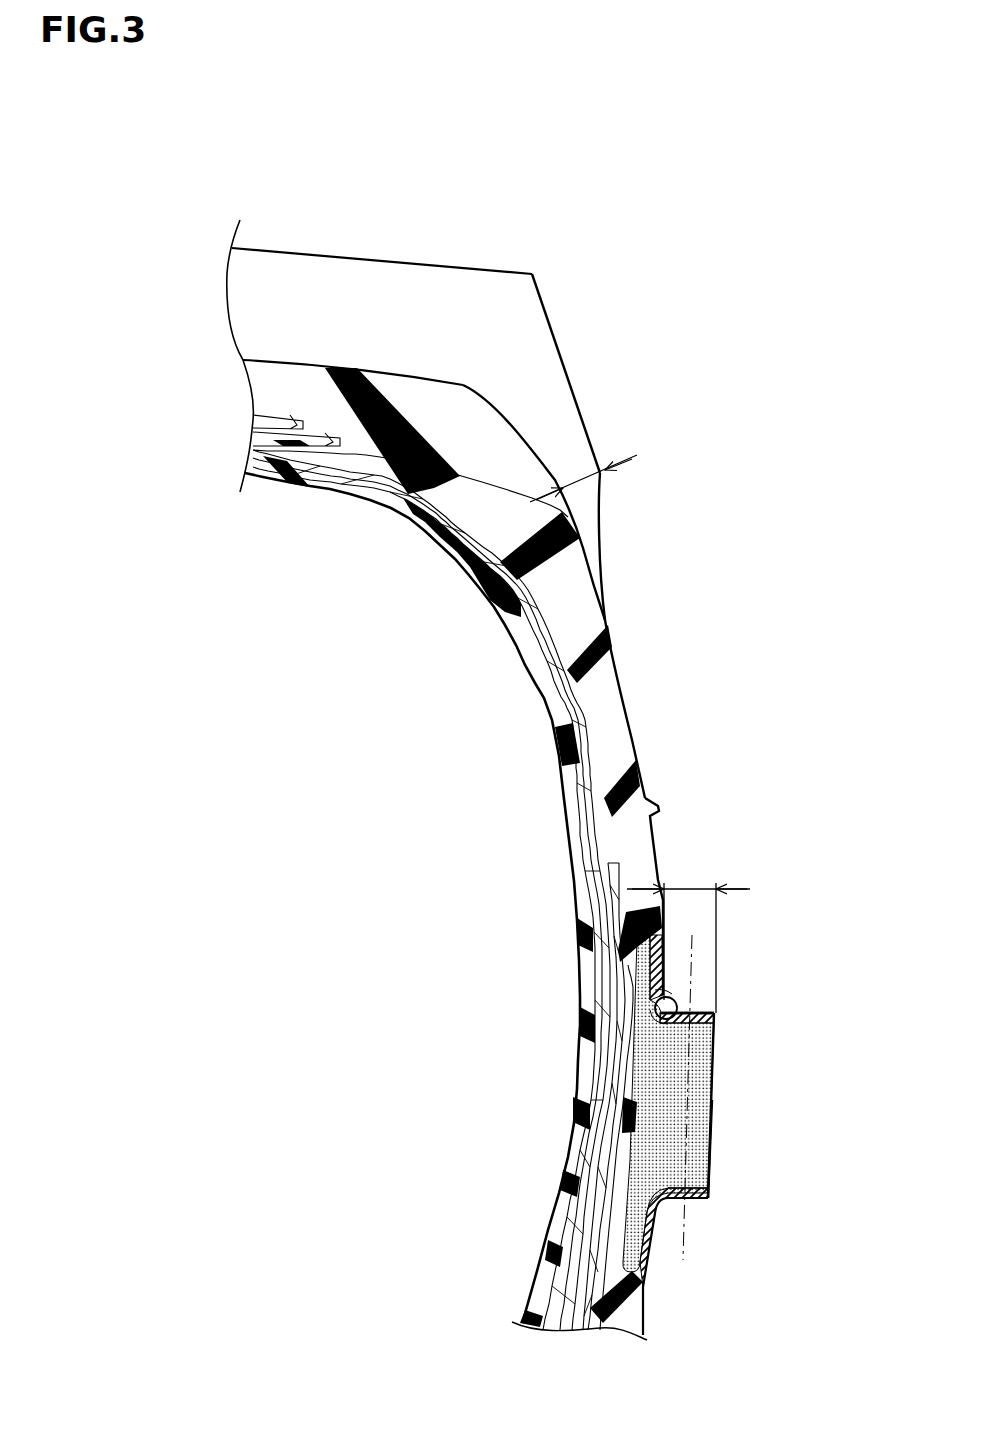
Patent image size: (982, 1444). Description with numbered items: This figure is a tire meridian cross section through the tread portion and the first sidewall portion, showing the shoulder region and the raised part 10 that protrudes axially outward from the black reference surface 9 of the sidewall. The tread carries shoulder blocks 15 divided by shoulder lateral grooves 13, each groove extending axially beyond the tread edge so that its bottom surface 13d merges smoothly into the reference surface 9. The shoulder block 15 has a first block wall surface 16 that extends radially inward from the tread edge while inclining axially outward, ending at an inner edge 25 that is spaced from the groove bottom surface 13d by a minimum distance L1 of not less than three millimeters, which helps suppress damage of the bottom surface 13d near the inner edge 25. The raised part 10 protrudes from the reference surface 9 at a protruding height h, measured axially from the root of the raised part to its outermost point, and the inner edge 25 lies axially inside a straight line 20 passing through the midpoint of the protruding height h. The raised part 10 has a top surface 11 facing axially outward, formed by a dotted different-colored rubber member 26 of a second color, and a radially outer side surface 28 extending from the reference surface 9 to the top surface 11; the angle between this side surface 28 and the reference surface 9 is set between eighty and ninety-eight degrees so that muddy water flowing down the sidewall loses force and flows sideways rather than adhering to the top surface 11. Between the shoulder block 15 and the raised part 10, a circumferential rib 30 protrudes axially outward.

The shoulder block 15 is at (337, 238).
The shoulder lateral groove 13 is at (390, 318).
The bottom surface of the shoulder lateral groove 13d is at (465, 385).
The first block wall surface 16 is at (562, 352).
The inner edge 25 is at (605, 470).
The minimum distance L1 is at (580, 484).
The reference surface 9 is at (633, 740).
The rib 30 is at (652, 802).
The protruding height h is at (688, 933).
The radially outer side surface 28 is at (690, 1013).
The different-colored rubber member 26 is at (660, 1078).
The top surface 11 is at (712, 1100).
The raised part 10 is at (721, 1142).
The straight line 20 is at (688, 1160).